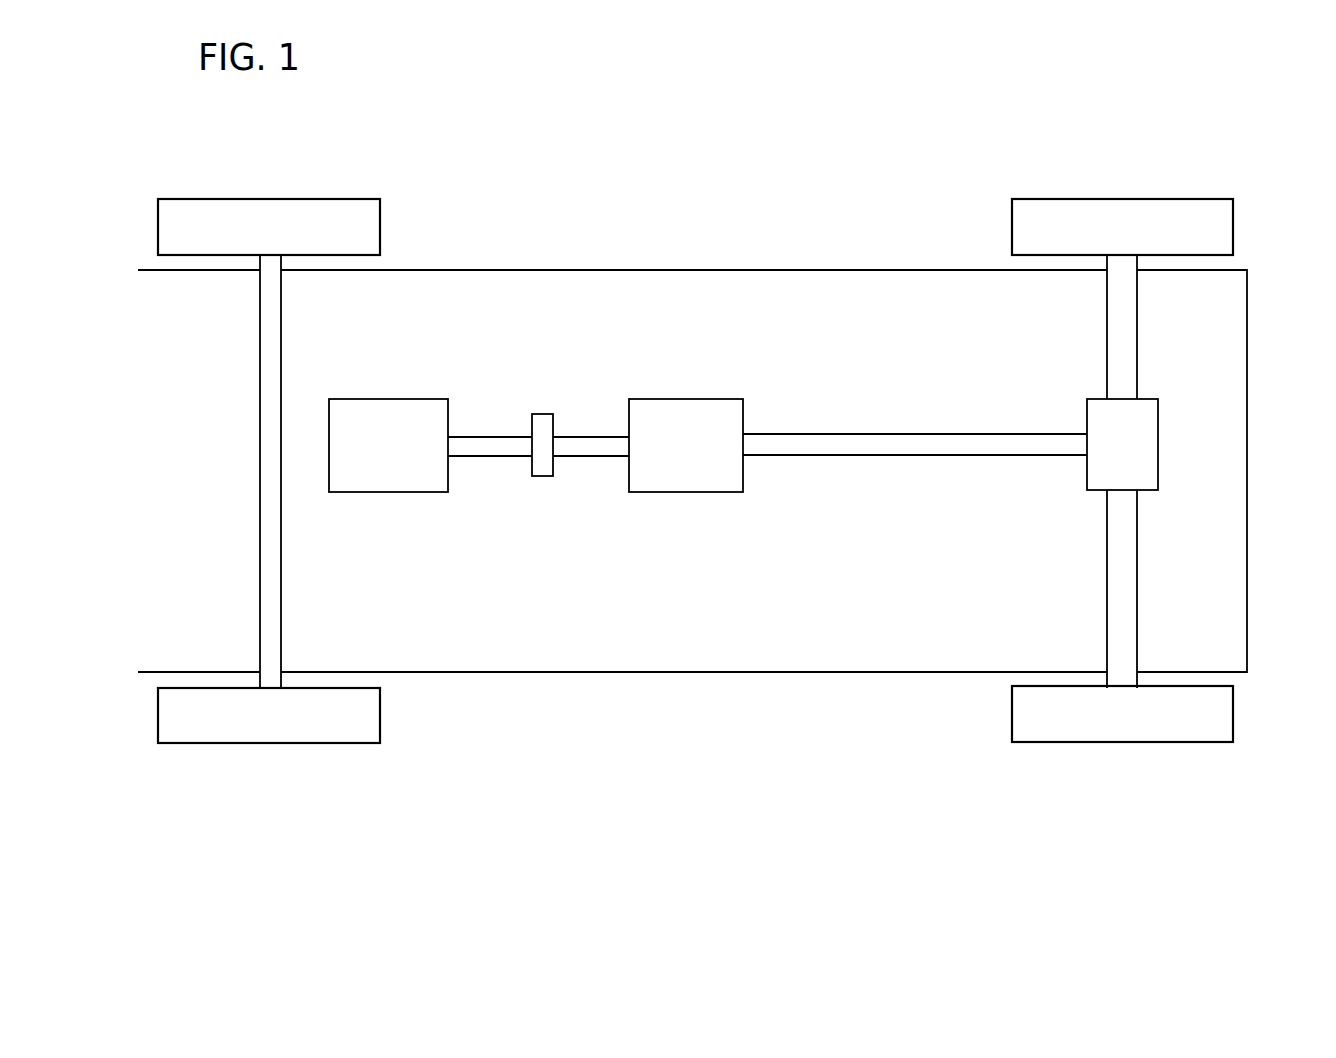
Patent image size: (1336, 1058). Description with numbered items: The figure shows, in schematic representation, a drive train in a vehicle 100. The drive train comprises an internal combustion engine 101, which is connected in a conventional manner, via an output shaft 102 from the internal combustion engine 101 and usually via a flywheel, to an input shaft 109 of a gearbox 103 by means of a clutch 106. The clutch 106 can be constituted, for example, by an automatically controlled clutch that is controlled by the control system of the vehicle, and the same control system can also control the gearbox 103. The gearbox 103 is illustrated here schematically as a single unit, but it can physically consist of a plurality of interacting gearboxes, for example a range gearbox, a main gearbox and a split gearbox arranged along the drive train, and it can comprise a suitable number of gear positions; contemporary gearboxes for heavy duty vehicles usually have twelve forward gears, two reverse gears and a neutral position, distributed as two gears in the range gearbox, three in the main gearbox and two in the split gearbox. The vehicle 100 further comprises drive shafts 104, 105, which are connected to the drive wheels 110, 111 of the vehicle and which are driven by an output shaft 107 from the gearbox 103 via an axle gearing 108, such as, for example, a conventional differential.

The vehicle 100 is at (598, 107).
The internal combustion engine 101 is at (361, 480).
The output shaft 102 is at (470, 440).
The gearbox 103 is at (688, 410).
The drive shaft 104 is at (1128, 323).
The drive shaft 105 is at (1133, 594).
The clutch 106 is at (540, 467).
The output shaft 107 is at (1009, 452).
The axle gearing 108 is at (1153, 440).
The input shaft 109 is at (580, 443).
The drive wheel 110 is at (1228, 716).
The drive wheel 111 is at (1228, 219).